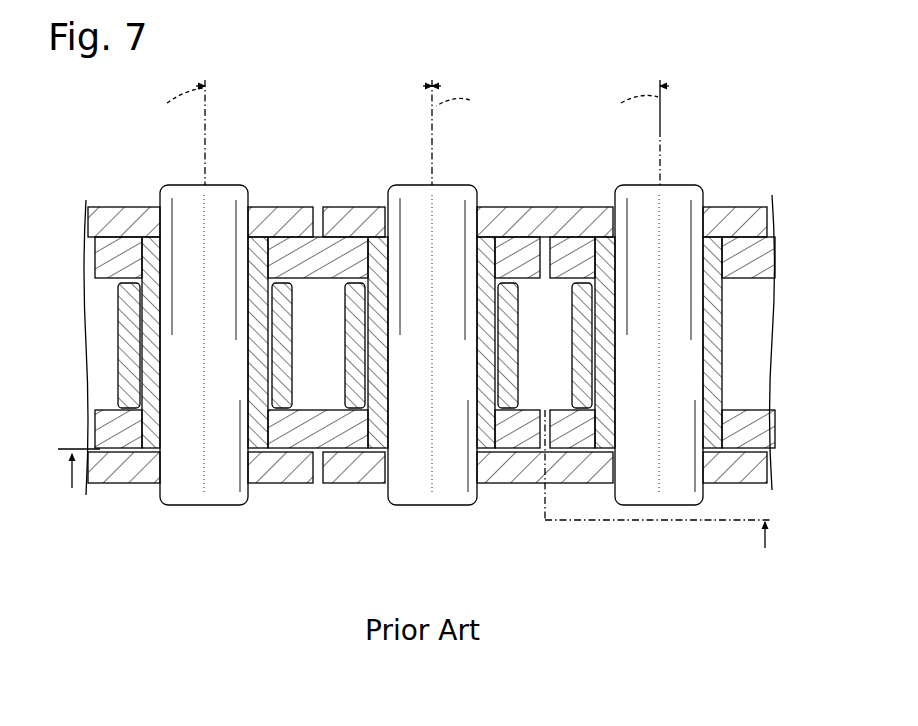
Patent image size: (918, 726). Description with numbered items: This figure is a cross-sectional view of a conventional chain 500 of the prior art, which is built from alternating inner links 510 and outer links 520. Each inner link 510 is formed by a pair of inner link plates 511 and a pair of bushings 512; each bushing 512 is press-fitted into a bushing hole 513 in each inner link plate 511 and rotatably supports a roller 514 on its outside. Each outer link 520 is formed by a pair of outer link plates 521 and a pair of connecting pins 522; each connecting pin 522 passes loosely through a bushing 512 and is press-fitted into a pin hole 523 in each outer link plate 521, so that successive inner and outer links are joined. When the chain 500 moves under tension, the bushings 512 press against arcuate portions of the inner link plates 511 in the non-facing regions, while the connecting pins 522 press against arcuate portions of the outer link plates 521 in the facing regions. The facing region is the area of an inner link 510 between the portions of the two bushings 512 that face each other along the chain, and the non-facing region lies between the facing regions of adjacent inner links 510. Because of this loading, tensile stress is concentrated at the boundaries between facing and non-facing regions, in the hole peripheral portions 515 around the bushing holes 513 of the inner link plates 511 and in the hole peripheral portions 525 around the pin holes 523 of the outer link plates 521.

The chain 500 is at (727, 78).
The inner link 510 is at (320, 455).
The inner link plate 511 is at (313, 287).
The bushing 512 is at (142, 207).
The bushing hole 513 is at (262, 244).
The roller 514 is at (148, 440).
The hole peripheral portion 515 is at (502, 408).
The outer link 520 is at (533, 512).
The outer link plate 521 is at (560, 196).
The connecting pin 522 is at (190, 192).
The pin hole 523 is at (606, 481).
The hole peripheral portion 525 is at (262, 207).